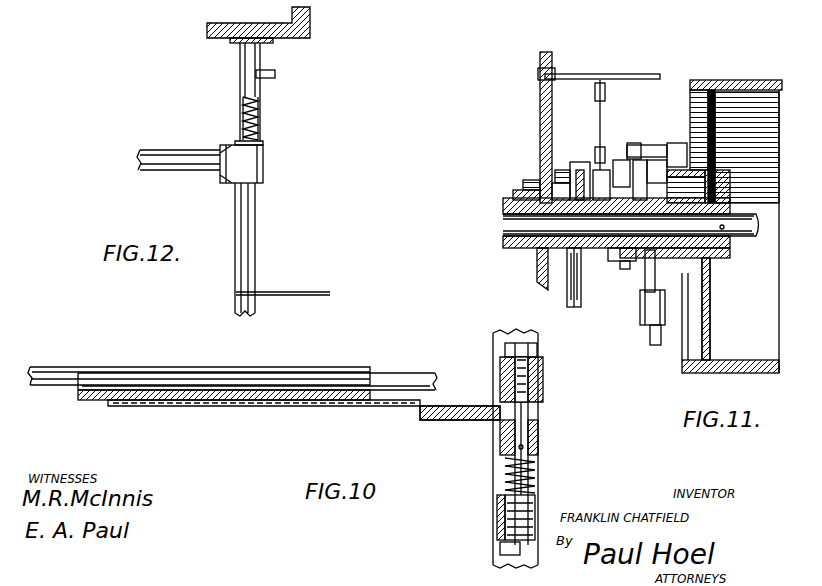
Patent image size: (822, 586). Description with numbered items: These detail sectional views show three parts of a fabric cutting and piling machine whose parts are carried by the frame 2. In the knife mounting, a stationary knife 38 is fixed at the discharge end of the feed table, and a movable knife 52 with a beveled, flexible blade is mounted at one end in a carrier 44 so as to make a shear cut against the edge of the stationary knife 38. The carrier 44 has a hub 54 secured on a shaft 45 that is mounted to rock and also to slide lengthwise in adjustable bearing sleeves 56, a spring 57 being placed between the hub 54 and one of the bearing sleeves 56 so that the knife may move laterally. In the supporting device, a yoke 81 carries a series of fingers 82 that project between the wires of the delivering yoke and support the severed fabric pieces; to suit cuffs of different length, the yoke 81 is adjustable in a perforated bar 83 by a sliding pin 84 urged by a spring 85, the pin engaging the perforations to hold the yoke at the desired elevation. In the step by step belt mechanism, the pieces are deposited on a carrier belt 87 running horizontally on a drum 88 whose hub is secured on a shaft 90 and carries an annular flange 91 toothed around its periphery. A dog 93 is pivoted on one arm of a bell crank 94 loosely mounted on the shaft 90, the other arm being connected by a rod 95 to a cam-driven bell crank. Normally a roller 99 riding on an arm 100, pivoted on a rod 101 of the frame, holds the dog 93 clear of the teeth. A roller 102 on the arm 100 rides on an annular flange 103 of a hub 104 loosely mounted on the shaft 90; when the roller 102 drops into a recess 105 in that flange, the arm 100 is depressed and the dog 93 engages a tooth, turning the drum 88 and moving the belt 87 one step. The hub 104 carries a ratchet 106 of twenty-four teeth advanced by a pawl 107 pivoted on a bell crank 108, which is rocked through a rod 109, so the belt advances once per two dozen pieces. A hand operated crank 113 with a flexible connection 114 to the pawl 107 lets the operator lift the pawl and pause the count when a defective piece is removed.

In FIG. 12, the frame 2 is at (293, 39).
In FIG. 10, the frame 2 is at (70, 382).
In FIG. 11, the frame 2 is at (515, 238).
In FIG. 10, the stationary knife 38 is at (102, 400).
In FIG. 10, the carrier 44 is at (512, 428).
In FIG. 10, the shaft 45 is at (519, 452).
In FIG. 10, the movable knife 52 is at (137, 403).
In FIG. 10, the hub 54 is at (510, 445).
In FIG. 10, the bearing sleeves 56 is at (510, 362).
In FIG. 10, the spring 57 is at (510, 478).
In FIG. 12, the yoke 81 is at (250, 270).
In FIG. 12, the fingers 82 is at (278, 292).
In FIG. 12, the perforated bar 83 is at (270, 43).
In FIG. 12, the sliding pin 84 is at (260, 90).
In FIG. 12, the spring 85 is at (258, 112).
In FIG. 11, the carrier belt 87 is at (700, 375).
In FIG. 11, the drum 88 is at (690, 368).
In FIG. 11, the shaft 90 is at (745, 250).
In FIG. 11, the annular flange 91 is at (683, 272).
In FIG. 11, the dog 93 is at (675, 146).
In FIG. 11, the bell crank 94 is at (642, 157).
In FIG. 11, the rod 95 is at (650, 340).
In FIG. 11, the roller 99 is at (635, 147).
In FIG. 11, the arm 100 is at (600, 172).
In FIG. 11, the rod 101 is at (535, 192).
In FIG. 11, the roller 102 is at (585, 165).
In FIG. 11, the annular flange 103 is at (612, 258).
In FIG. 11, the hub 104 is at (546, 249).
In FIG. 11, the recess 105 is at (623, 265).
In FIG. 11, the ratchet 106 is at (582, 250).
In FIG. 11, the pawl 107 is at (578, 172).
In FIG. 11, the bell crank 108 is at (570, 180).
In FIG. 11, the rod 109 is at (580, 305).
In FIG. 11, the hand operated crank 113 is at (612, 79).
In FIG. 11, the flexible connection 114 is at (606, 108).